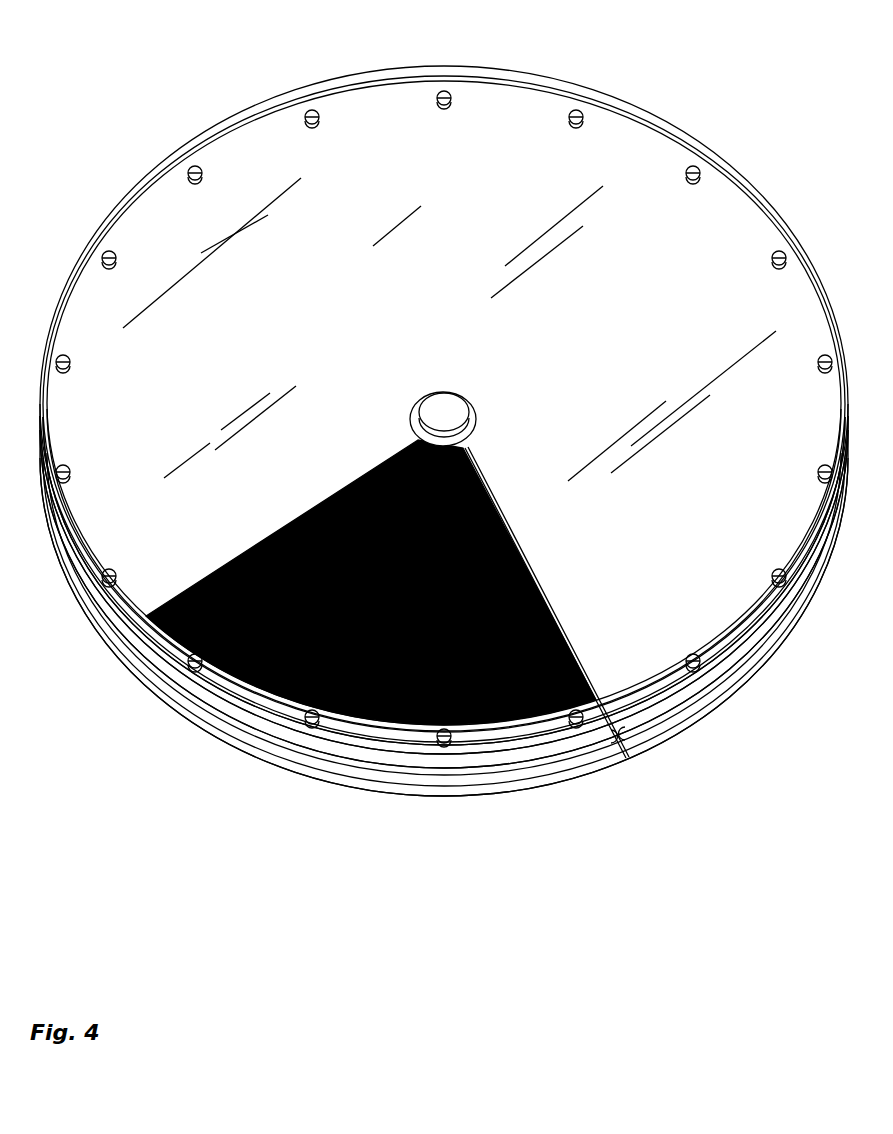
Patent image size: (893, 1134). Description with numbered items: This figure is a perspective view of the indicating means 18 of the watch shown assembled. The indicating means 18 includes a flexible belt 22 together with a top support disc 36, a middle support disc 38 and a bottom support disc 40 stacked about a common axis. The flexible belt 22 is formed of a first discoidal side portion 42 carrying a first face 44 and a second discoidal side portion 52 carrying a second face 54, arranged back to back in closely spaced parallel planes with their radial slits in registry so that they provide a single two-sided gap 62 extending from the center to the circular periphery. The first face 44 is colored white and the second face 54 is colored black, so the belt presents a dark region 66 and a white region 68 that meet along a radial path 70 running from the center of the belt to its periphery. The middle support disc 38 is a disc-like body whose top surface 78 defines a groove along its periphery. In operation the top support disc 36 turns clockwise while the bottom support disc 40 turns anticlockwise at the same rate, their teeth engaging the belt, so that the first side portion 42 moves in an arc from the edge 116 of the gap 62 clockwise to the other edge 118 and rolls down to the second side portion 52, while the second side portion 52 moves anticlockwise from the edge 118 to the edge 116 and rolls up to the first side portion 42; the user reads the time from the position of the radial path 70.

The indicating means 18 is at (118, 145).
The flexible belt 22 is at (353, 757).
The top support disc 36 is at (730, 630).
The middle support disc 38 is at (410, 757).
The bottom support disc 40 is at (455, 785).
The first discoidal side portion 42 is at (267, 717).
The first face 44 is at (205, 690).
The second discoidal side portion 52 is at (707, 685).
The second face 54 is at (430, 768).
The two-sided gap 62 is at (655, 693).
The dark region 66 is at (165, 628).
The white region 68 is at (620, 165).
The radial path 70 is at (185, 568).
The top surface 78 is at (525, 765).
The edge of the gap 116 is at (600, 700).
The other edge of the gap 118 is at (575, 667).